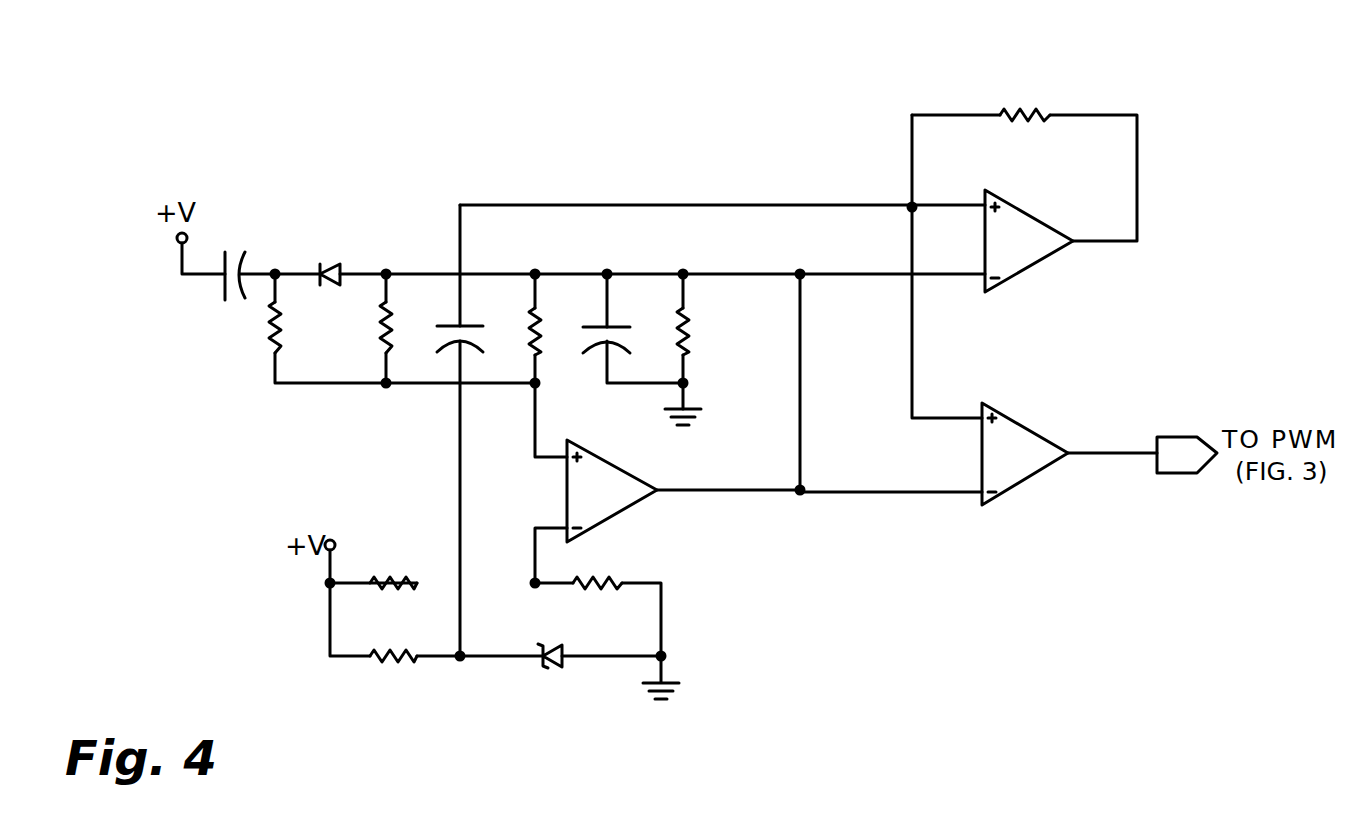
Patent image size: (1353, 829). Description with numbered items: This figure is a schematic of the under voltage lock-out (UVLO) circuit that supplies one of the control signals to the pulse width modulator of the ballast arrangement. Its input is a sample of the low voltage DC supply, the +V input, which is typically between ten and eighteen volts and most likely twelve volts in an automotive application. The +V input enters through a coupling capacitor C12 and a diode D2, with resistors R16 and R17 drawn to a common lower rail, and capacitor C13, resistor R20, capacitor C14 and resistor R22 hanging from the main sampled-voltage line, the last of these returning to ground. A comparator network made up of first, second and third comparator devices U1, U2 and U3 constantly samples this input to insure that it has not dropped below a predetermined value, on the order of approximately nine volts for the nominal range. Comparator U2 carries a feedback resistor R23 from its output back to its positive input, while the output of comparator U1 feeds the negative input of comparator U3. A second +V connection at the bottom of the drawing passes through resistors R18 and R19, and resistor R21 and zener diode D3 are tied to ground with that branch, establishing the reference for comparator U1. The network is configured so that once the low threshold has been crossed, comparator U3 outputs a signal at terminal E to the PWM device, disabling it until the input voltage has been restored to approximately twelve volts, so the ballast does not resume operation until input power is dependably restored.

The capacitor C12 is at (235, 250).
The diode D2 is at (333, 263).
The resistor R16 is at (270, 343).
The resistor R17 is at (380, 343).
The capacitor C13 is at (437, 331).
The resistor R20 is at (528, 333).
The capacitor C14 is at (583, 337).
The resistor R22 is at (688, 311).
The feedback resistor R23 is at (1033, 107).
The second comparator device U2 is at (1029, 241).
The third comparator device U3 is at (1025, 454).
The first comparator device U1 is at (612, 491).
The resistor R21 is at (600, 577).
The zener diode D3 is at (553, 667).
The resistor R18 is at (388, 575).
The resistor R19 is at (385, 664).
The output terminal to PWM E is at (1187, 455).